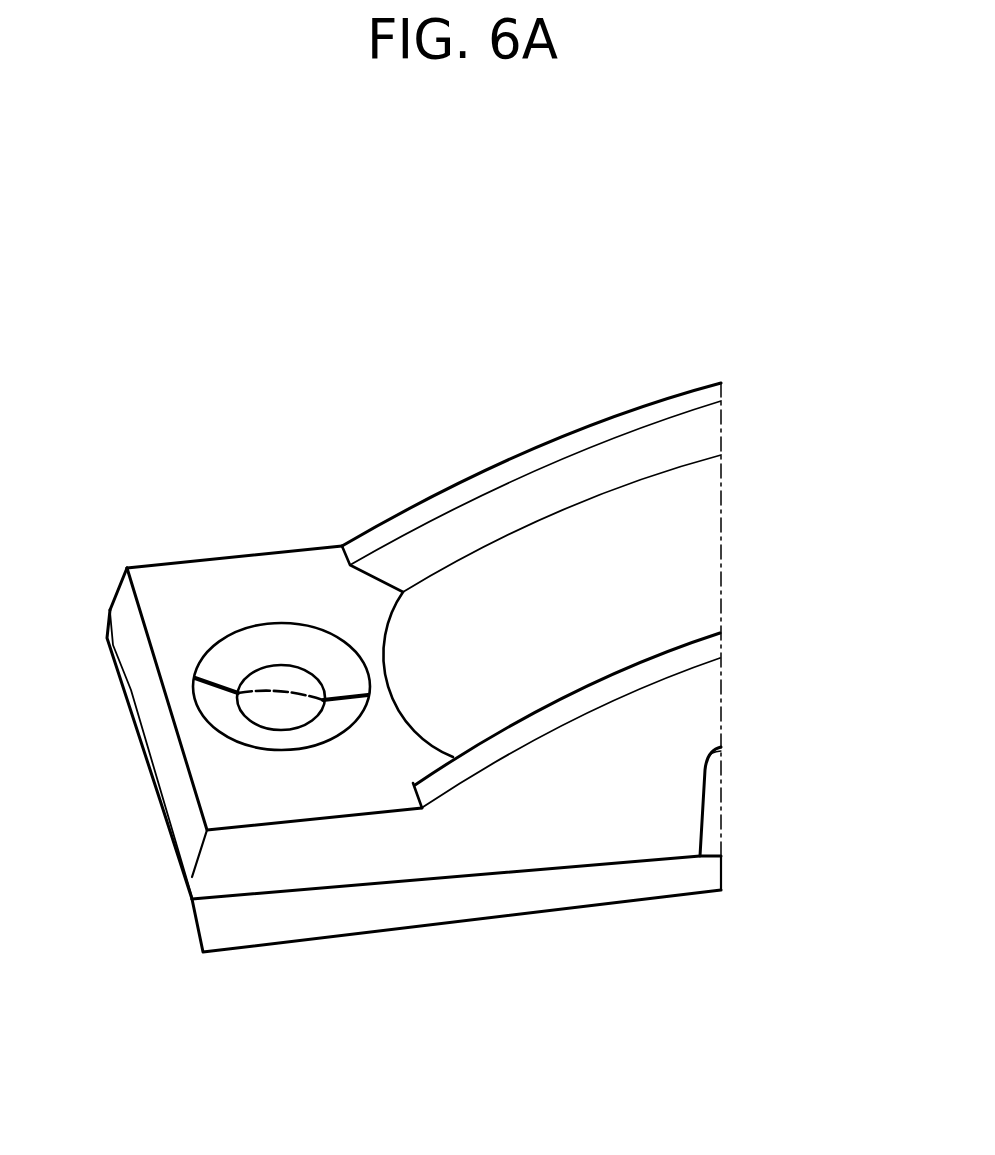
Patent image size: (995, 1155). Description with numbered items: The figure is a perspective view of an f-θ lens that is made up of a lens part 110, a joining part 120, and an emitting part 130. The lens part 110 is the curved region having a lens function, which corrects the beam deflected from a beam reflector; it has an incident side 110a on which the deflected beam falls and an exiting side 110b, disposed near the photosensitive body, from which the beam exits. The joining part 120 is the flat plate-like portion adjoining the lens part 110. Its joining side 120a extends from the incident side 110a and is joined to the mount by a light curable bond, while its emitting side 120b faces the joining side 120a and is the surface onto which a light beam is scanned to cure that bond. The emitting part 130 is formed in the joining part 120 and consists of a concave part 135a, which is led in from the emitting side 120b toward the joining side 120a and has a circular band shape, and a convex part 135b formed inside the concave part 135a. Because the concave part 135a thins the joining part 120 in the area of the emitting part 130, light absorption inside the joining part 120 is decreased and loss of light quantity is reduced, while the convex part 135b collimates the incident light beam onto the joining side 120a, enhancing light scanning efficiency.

The lens part 110 is at (617, 663).
The incident side 110a is at (826, 699).
The exiting side 110b is at (667, 603).
The joining part 120 is at (367, 724).
The joining side 120a is at (257, 927).
The emitting side 120b is at (247, 792).
The emitting part 130 is at (250, 600).
The concave part 135a is at (220, 660).
The convex part 135b is at (283, 677).